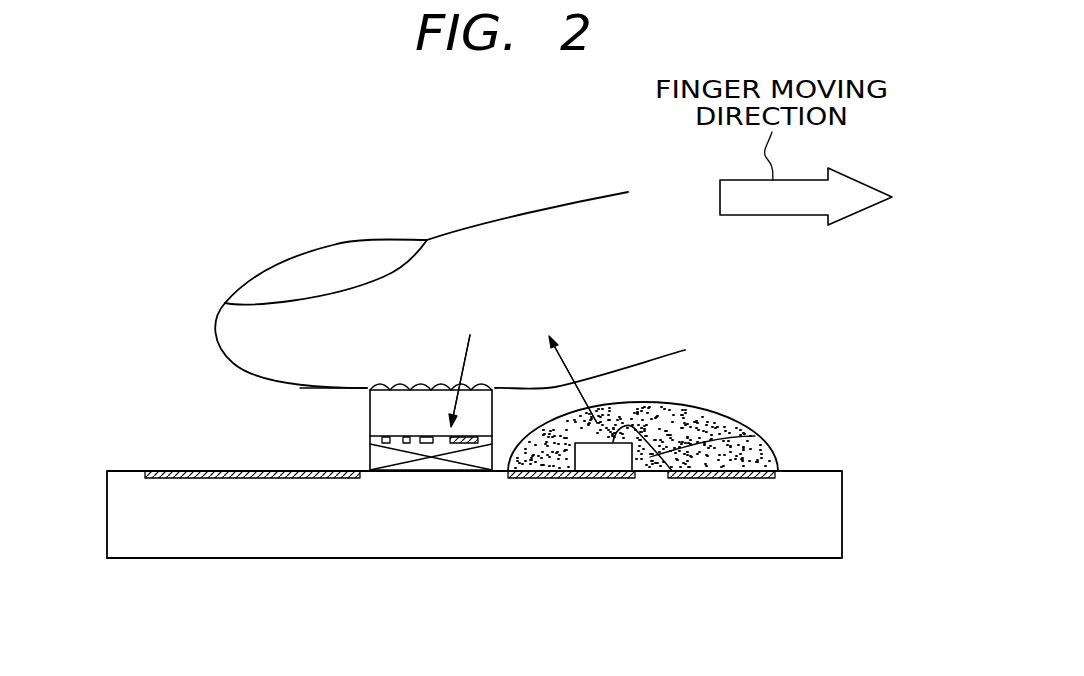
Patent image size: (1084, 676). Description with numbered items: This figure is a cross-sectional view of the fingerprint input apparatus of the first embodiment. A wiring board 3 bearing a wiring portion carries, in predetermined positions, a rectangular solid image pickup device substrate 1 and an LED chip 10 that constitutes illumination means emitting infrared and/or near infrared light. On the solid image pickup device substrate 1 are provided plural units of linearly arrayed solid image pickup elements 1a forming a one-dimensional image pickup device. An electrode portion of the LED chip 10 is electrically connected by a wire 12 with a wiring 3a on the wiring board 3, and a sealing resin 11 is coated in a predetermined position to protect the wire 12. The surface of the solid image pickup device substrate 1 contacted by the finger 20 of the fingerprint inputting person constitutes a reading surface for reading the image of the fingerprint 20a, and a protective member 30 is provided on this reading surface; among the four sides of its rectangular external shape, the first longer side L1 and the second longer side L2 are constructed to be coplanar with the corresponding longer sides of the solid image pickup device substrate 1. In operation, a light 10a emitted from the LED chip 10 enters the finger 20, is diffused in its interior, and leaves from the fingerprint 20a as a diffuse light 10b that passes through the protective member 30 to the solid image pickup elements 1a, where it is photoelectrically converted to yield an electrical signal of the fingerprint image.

The solid image pickup device substrate 1 is at (442, 463).
The solid image pickup elements 1a is at (407, 472).
The wiring board 3 is at (830, 510).
The wiring 3a is at (732, 478).
The LED chip 10 is at (603, 460).
The light 10a is at (570, 363).
The diffuse light 10b is at (445, 332).
The sealing resin 11 is at (707, 412).
The wire 12 is at (752, 437).
The finger 20 is at (537, 228).
The fingerprint 20a is at (413, 380).
The protective member 30 is at (368, 427).
The first longer side L1 is at (505, 390).
The second longer side L2 is at (368, 403).